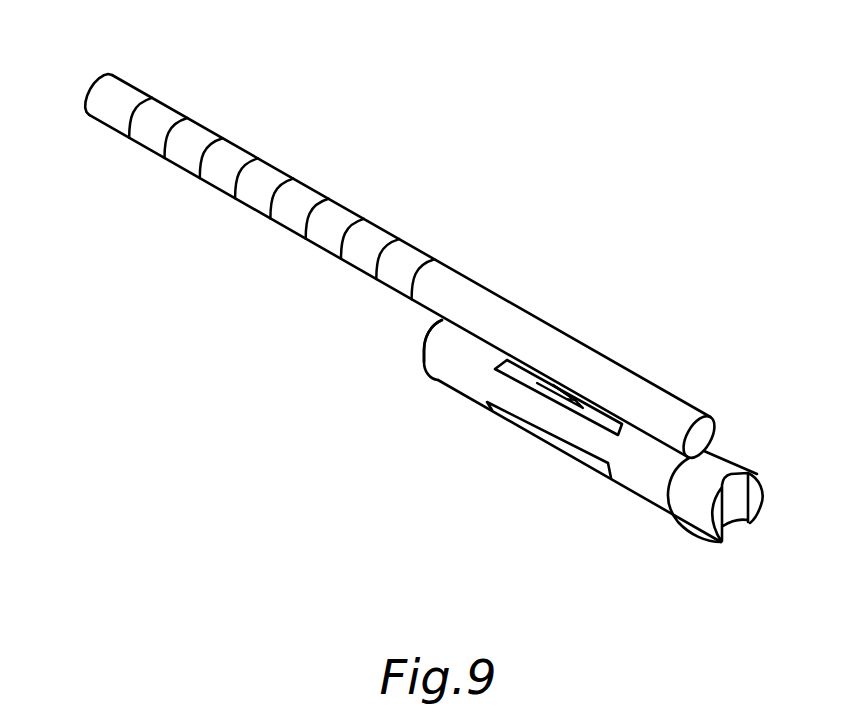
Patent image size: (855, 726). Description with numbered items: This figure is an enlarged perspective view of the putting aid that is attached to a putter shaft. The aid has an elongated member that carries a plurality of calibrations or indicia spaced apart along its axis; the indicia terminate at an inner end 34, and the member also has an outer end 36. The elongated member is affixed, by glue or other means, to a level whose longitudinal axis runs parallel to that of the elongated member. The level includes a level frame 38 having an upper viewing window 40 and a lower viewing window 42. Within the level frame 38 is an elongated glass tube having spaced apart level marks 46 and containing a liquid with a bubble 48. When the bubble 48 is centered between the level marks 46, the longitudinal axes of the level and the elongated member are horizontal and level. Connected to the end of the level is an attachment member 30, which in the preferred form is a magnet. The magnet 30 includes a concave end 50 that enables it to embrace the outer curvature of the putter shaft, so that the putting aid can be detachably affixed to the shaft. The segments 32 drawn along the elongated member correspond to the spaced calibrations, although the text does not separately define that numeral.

The attachment member 30 is at (696, 520).
The segments of shaft 32 is at (290, 175).
The inner end 34 is at (702, 441).
The outer end 36 is at (97, 85).
The level frame 38 is at (442, 378).
The upper viewing window 40 is at (522, 371).
The lower viewing window 42 is at (503, 422).
The level marks 46 is at (590, 412).
The bubble 48 is at (569, 400).
The concave end 50 is at (737, 512).